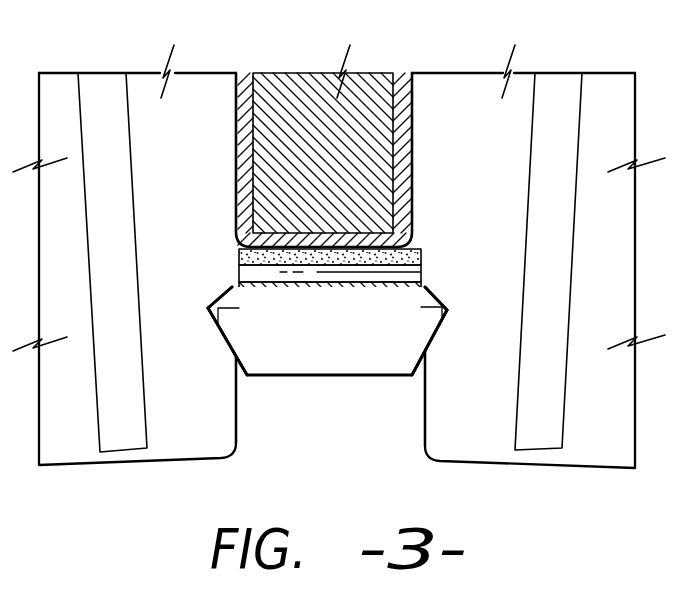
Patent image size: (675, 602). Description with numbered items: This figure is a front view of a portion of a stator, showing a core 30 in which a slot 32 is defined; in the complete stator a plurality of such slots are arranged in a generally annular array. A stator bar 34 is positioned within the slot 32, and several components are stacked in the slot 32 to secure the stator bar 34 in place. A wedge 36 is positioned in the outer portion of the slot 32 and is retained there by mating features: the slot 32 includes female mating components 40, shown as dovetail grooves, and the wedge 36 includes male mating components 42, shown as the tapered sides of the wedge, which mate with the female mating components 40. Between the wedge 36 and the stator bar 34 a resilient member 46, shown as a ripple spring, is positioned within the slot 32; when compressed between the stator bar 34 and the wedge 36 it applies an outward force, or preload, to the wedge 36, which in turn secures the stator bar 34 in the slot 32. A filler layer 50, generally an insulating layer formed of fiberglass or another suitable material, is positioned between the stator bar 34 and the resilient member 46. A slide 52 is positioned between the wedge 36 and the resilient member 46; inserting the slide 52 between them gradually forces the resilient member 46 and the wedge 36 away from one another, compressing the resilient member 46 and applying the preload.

The core 30 is at (197, 103).
The slot 32 is at (287, 420).
The stator bar 34 is at (403, 97).
The wedge 36 is at (317, 378).
The female mating component 40 is at (231, 299).
The male mating component 42 is at (243, 338).
The resilient member 46 is at (403, 276).
The filler layer 50 is at (421, 257).
The slide 52 is at (403, 311).